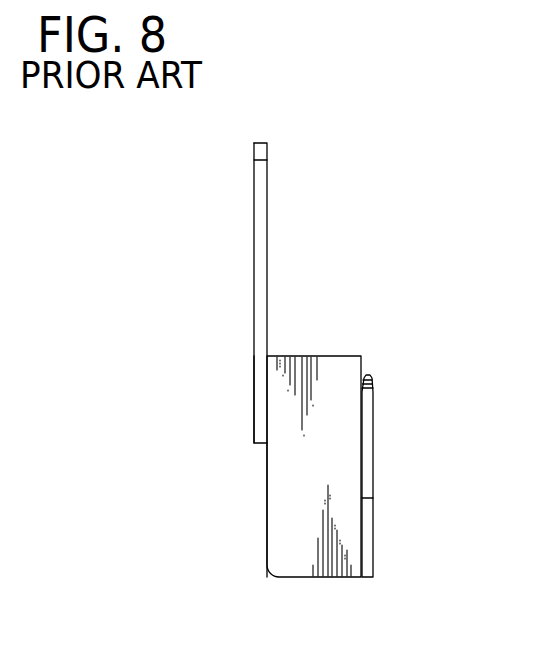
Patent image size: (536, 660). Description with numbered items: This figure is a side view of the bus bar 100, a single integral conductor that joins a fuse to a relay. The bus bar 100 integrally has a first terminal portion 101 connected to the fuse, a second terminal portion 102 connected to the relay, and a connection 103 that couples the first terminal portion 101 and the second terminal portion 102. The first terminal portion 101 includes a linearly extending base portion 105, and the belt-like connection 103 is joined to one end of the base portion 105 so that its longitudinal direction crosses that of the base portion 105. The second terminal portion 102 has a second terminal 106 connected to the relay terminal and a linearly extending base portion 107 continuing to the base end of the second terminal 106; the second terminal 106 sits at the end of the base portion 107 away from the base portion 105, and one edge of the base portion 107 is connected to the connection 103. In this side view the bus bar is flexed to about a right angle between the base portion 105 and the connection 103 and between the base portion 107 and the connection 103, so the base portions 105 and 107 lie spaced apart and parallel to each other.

The bus bar 100 is at (300, 144).
The first terminal portion 101 is at (254, 247).
The second terminal portion 102 is at (375, 511).
The connection 103 is at (322, 577).
The base portion 105 is at (254, 410).
The second terminal 106 is at (365, 443).
The base portion 107 is at (367, 554).